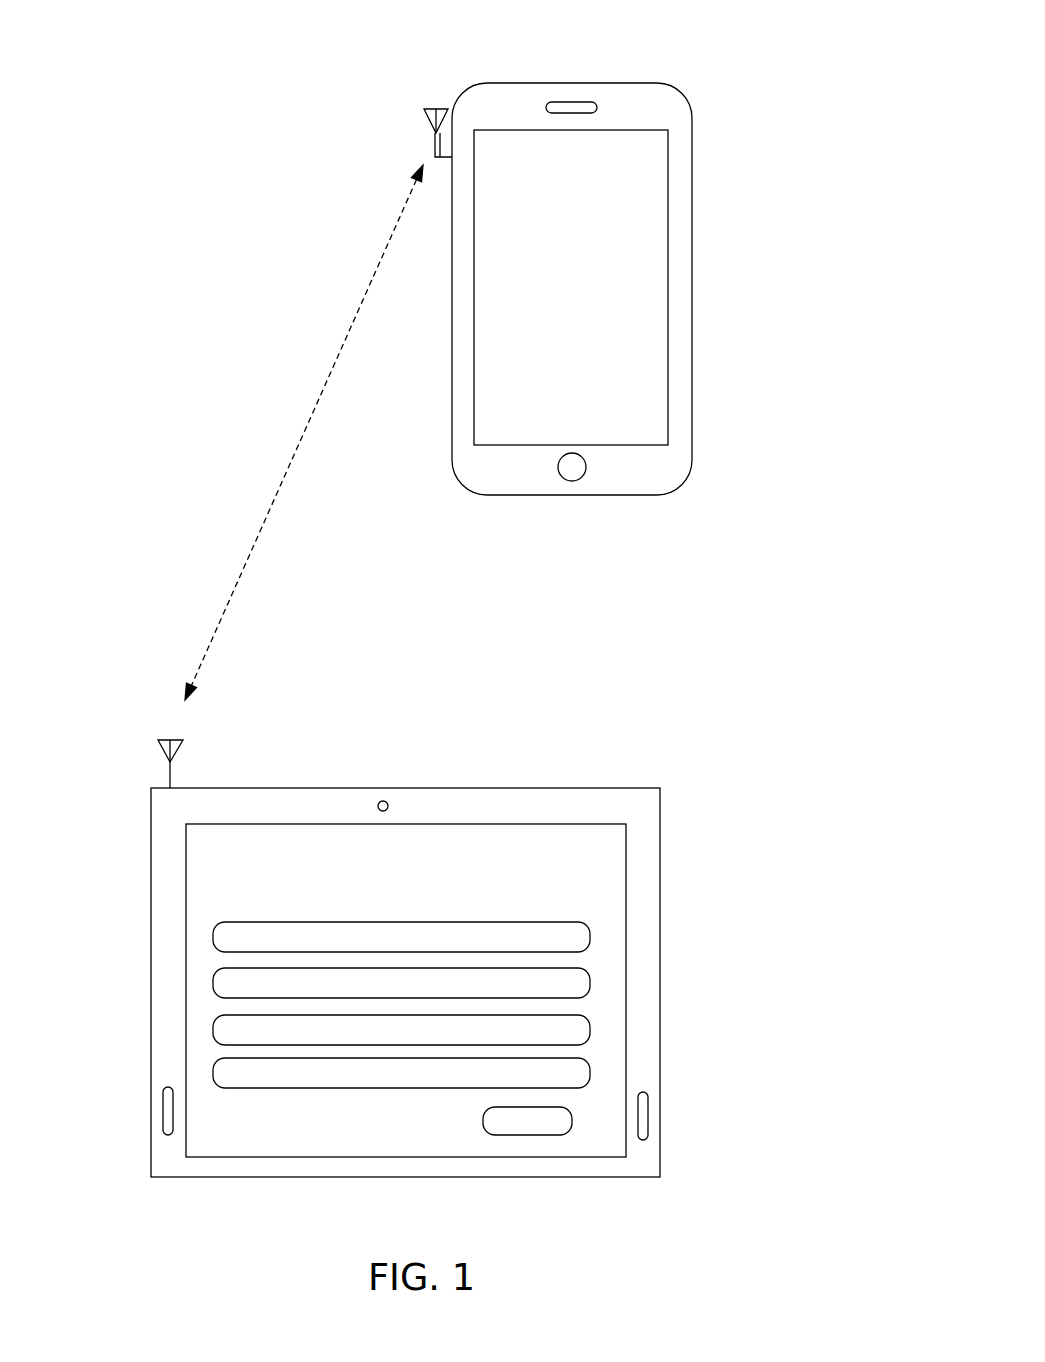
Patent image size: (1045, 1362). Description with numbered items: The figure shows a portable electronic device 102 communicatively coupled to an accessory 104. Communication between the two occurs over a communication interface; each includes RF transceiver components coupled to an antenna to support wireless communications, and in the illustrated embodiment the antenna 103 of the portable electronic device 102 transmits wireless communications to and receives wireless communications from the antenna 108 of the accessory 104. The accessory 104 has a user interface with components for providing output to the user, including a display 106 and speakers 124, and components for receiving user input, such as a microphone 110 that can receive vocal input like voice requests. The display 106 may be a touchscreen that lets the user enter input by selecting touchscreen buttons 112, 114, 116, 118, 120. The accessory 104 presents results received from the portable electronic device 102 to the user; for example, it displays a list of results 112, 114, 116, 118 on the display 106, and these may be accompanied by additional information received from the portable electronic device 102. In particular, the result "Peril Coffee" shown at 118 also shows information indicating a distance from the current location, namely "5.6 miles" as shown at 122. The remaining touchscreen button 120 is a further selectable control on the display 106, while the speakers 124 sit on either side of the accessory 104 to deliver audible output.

The portable electronic device 102 is at (708, 37).
The antenna 103 is at (426, 112).
The accessory 104 is at (637, 735).
The display 106 is at (592, 885).
The antenna 108 is at (160, 748).
The microphone 110 is at (383, 801).
The touchscreen button / listed result 112 is at (592, 937).
The touchscreen button / listed result 114 is at (592, 983).
The touchscreen button / listed result 116 is at (592, 1030).
The touchscreen button / listed result 118 is at (470, 1122).
The touchscreen button 120 is at (574, 1120).
The additional information (distance indication) 122 is at (427, 1083).
The speakers 124 is at (163, 1115).